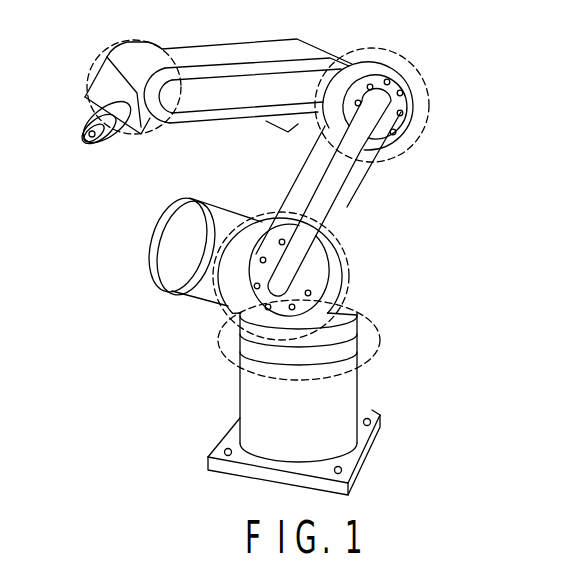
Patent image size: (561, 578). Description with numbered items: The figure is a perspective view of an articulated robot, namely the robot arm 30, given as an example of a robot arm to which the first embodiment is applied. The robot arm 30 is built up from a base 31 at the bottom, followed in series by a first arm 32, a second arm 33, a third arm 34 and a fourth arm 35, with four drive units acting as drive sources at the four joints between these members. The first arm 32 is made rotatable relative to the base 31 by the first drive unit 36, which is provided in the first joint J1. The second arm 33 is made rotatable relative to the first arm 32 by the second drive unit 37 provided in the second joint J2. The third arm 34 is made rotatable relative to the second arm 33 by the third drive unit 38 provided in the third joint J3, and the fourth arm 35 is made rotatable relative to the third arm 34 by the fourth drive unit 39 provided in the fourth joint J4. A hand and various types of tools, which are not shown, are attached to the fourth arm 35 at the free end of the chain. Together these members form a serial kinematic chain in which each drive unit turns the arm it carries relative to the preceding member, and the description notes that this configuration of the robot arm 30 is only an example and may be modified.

The robot arm 30 is at (378, 22).
The base 31 is at (347, 388).
The first arm 32 is at (330, 250).
The second arm 33 is at (347, 197).
The third arm 34 is at (241, 53).
The fourth arm 35 is at (100, 76).
The first drive unit 36 is at (337, 313).
The second drive unit 37 is at (220, 192).
The third drive unit 38 is at (283, 133).
The fourth drive unit 39 is at (110, 80).
The first joint J1 is at (228, 352).
The second joint J2 is at (214, 300).
The third joint J3 is at (427, 107).
The fourth joint J4 is at (145, 36).